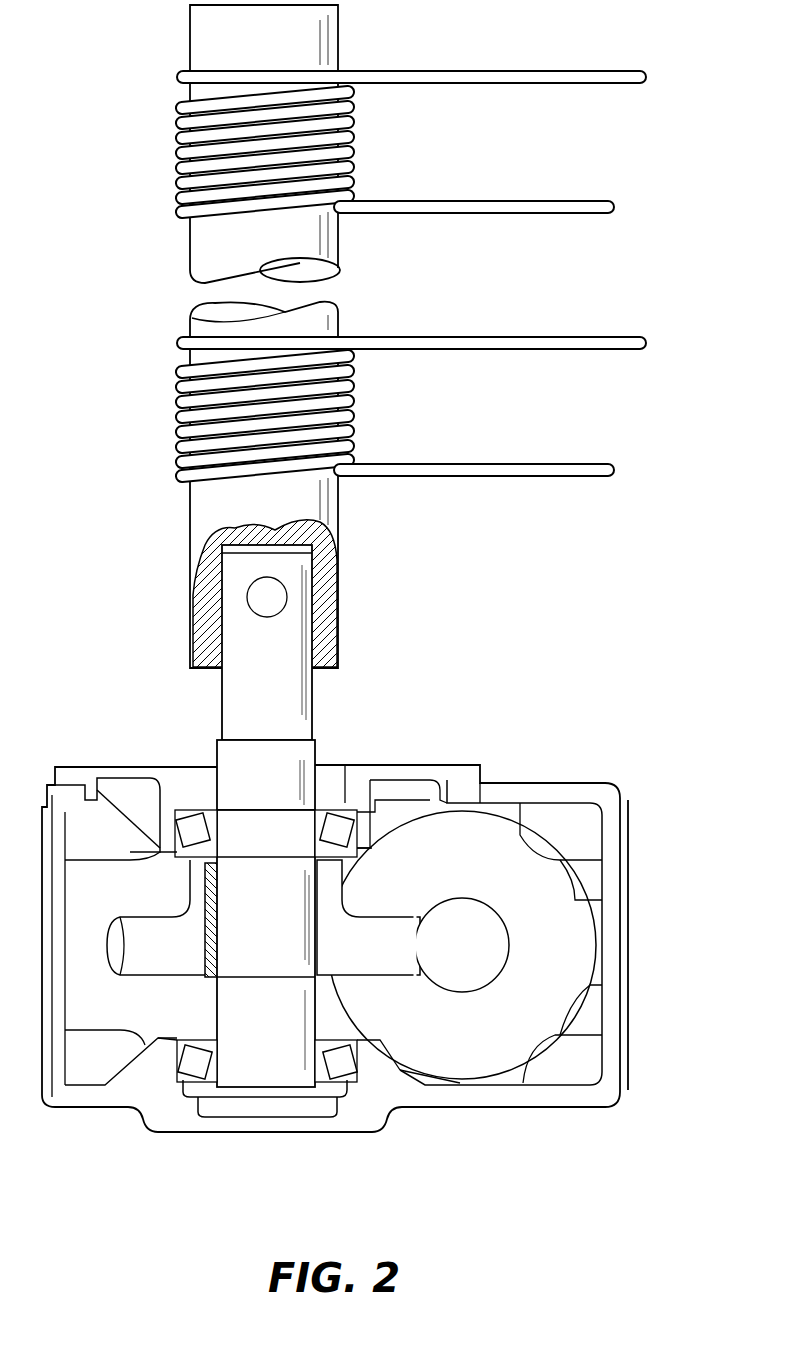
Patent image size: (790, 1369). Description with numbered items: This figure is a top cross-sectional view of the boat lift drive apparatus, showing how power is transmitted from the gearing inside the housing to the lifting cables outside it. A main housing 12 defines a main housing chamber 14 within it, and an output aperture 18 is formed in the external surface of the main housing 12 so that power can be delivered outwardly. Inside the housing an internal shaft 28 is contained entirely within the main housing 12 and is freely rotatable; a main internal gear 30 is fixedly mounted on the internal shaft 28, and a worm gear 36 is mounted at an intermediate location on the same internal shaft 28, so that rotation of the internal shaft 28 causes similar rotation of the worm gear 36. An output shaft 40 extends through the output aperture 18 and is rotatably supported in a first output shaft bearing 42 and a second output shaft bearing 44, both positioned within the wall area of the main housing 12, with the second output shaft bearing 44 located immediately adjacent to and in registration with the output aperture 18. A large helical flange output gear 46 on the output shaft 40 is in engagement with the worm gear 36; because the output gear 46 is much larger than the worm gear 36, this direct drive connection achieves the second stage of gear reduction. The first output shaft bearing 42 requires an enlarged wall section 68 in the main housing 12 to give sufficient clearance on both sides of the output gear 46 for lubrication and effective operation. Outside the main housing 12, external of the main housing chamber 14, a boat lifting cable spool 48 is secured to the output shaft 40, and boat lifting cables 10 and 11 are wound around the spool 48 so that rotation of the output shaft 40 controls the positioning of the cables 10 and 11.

The boat lifting cable 10 is at (563, 465).
The boat lifting cable 11 is at (563, 200).
The main housing 12 is at (600, 1100).
The main housing chamber 14 is at (139, 1018).
The output aperture 18 is at (312, 797).
The internal shaft 28 is at (478, 941).
The main internal gear 30 is at (600, 958).
The worm gear 36 is at (502, 923).
The output shaft 40 is at (288, 1048).
The first output shaft bearing 42 is at (195, 1068).
The second output shaft bearing 44 is at (352, 820).
The output gear 46 is at (181, 958).
The boat lifting cable spool 48 is at (190, 520).
The enlarged wall section 68 is at (323, 1133).